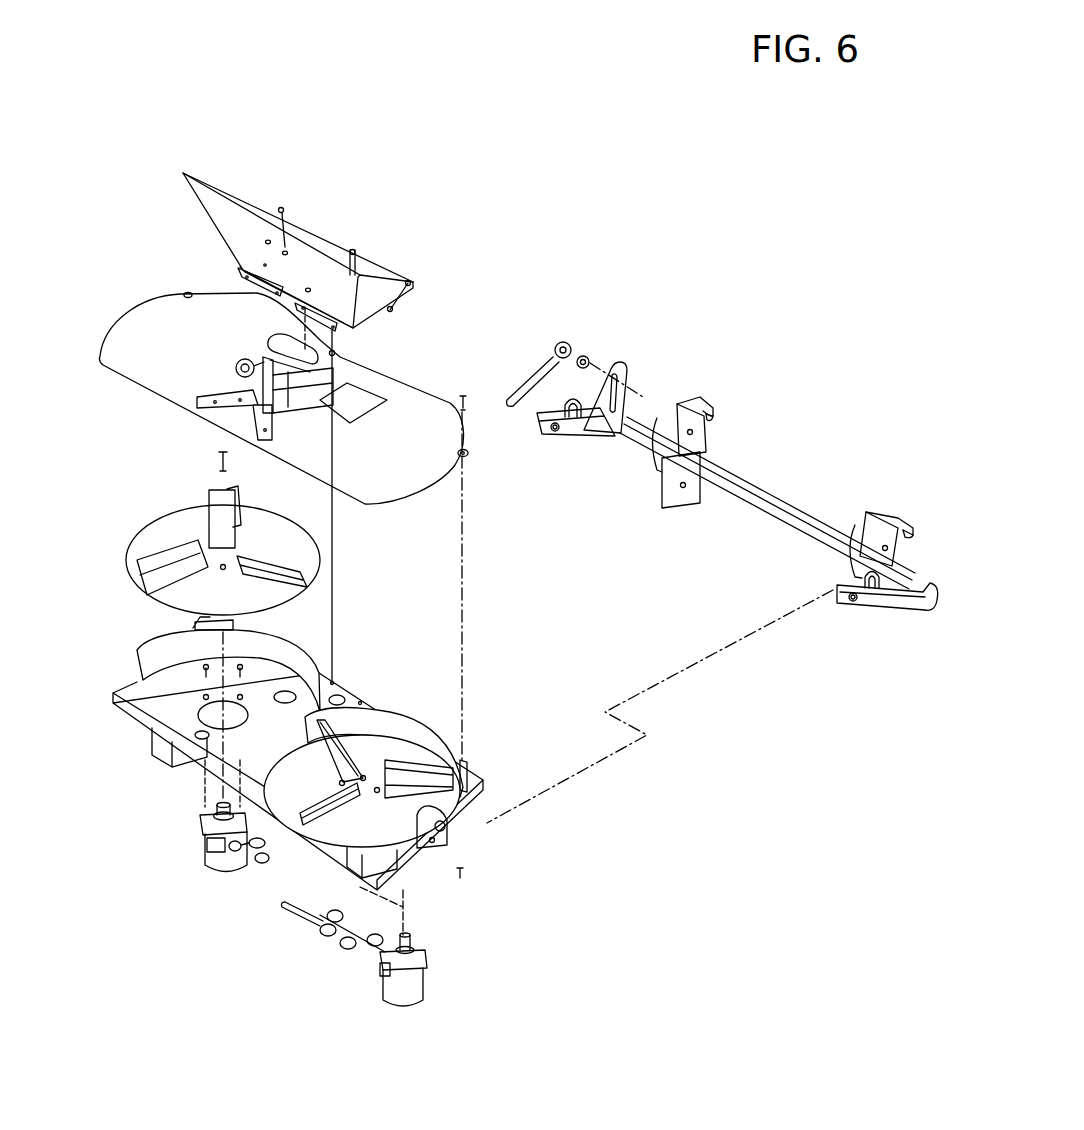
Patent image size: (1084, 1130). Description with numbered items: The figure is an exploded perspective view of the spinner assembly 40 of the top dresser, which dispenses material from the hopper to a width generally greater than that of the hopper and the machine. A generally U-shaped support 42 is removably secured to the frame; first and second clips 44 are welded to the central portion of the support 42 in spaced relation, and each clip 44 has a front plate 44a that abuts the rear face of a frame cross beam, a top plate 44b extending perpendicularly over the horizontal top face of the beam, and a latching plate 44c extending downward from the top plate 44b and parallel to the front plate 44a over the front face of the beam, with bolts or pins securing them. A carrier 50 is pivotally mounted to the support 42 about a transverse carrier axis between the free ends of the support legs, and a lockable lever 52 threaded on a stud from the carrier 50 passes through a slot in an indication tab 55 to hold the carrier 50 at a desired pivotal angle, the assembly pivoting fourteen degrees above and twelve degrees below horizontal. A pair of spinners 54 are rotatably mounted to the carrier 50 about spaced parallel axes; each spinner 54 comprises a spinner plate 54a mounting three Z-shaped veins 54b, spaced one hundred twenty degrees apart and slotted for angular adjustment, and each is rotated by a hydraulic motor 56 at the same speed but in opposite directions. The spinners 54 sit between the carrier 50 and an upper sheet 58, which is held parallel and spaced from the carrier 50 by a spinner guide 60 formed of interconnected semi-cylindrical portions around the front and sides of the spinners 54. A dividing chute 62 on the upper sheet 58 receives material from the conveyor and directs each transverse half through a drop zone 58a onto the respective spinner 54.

The spinner assembly 40 is at (676, 229).
The support 42 is at (745, 495).
The clips 44 is at (702, 403).
The front plate 44a is at (673, 487).
The top plate 44b is at (695, 400).
The latching plate 44c is at (712, 414).
The carrier 50 is at (128, 708).
The lockable lever 52 is at (513, 393).
The spinners 54 is at (173, 530).
The spinner plate 54a is at (307, 552).
The veins 54b is at (147, 572).
The indication tab 55 is at (623, 363).
The hydraulic motor 56 is at (213, 860).
The upper sheet 58 is at (170, 332).
The drop zone 58a is at (283, 347).
The spinner guide 60 is at (297, 658).
The dividing chute 62 is at (337, 253).